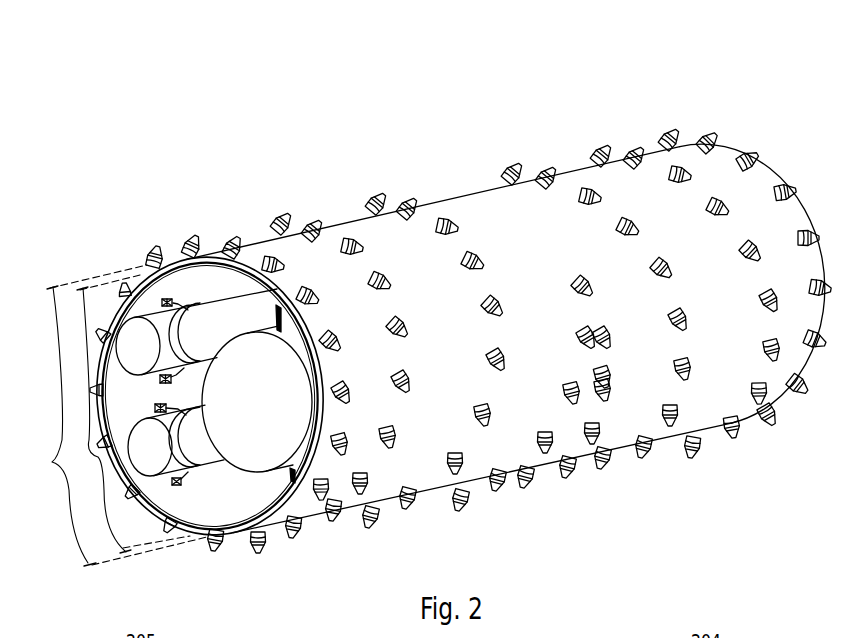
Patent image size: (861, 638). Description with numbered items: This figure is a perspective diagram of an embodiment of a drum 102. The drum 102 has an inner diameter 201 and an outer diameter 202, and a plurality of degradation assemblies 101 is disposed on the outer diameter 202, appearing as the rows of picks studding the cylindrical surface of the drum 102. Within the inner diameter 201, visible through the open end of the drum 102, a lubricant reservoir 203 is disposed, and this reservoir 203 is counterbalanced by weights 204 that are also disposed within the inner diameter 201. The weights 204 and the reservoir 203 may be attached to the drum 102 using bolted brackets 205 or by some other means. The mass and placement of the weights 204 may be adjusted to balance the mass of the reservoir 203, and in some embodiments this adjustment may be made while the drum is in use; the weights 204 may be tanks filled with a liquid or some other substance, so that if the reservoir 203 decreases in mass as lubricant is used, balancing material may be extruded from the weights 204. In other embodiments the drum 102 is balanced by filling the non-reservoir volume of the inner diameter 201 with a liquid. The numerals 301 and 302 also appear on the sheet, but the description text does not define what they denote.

The degradation assemblies 101 is at (595, 143).
The drum 102 is at (222, 101).
The inner diameter 201 is at (128, 414).
The outer diameter 202 is at (118, 415).
The lubricant reservoir 203 is at (265, 400).
The weights 204 is at (148, 447).
The bolted brackets 205 is at (202, 458).
The element 301 is at (624, 637).
The element 302 is at (769, 637).